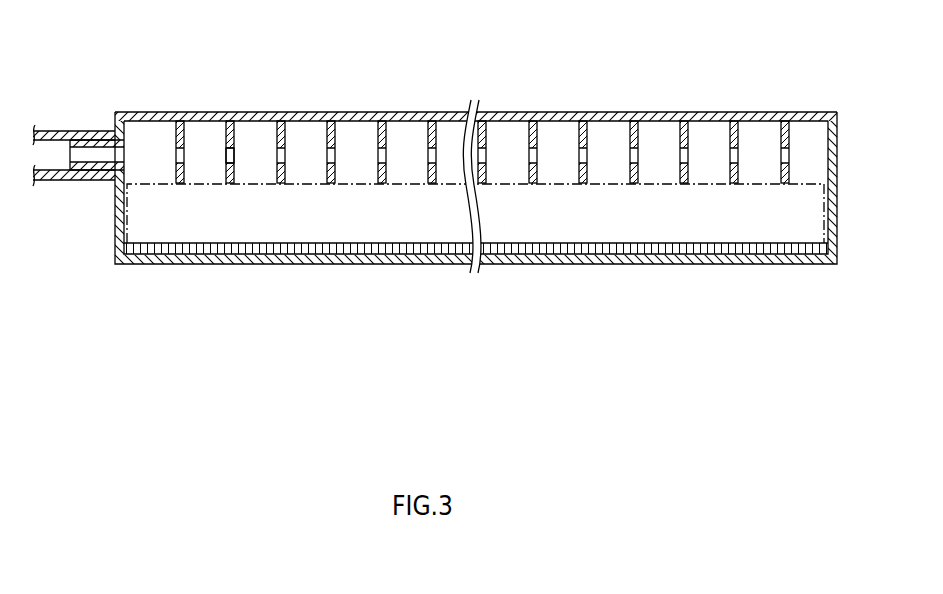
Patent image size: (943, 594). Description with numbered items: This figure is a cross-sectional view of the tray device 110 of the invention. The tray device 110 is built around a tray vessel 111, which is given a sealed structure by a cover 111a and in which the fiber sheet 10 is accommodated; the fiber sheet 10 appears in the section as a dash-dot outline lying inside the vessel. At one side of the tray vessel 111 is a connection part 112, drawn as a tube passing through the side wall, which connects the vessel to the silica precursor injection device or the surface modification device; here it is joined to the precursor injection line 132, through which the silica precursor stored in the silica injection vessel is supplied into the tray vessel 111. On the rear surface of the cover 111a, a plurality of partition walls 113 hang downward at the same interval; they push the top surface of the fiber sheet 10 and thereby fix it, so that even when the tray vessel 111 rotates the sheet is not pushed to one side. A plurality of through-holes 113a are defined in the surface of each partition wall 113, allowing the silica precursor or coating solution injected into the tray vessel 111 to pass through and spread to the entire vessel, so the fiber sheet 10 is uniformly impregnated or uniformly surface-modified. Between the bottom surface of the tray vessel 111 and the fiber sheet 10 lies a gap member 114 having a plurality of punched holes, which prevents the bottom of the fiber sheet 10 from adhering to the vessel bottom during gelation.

The tray device 110 is at (476, 175).
The tray vessel 111 is at (360, 266).
The cover 111a is at (350, 117).
The partition walls 113 is at (185, 178).
The through-holes 113a is at (232, 155).
The gap member 114 is at (596, 247).
The fiber sheet 10 is at (712, 182).
The precursor injection line 132 is at (65, 128).
The connection part 112 is at (80, 180).